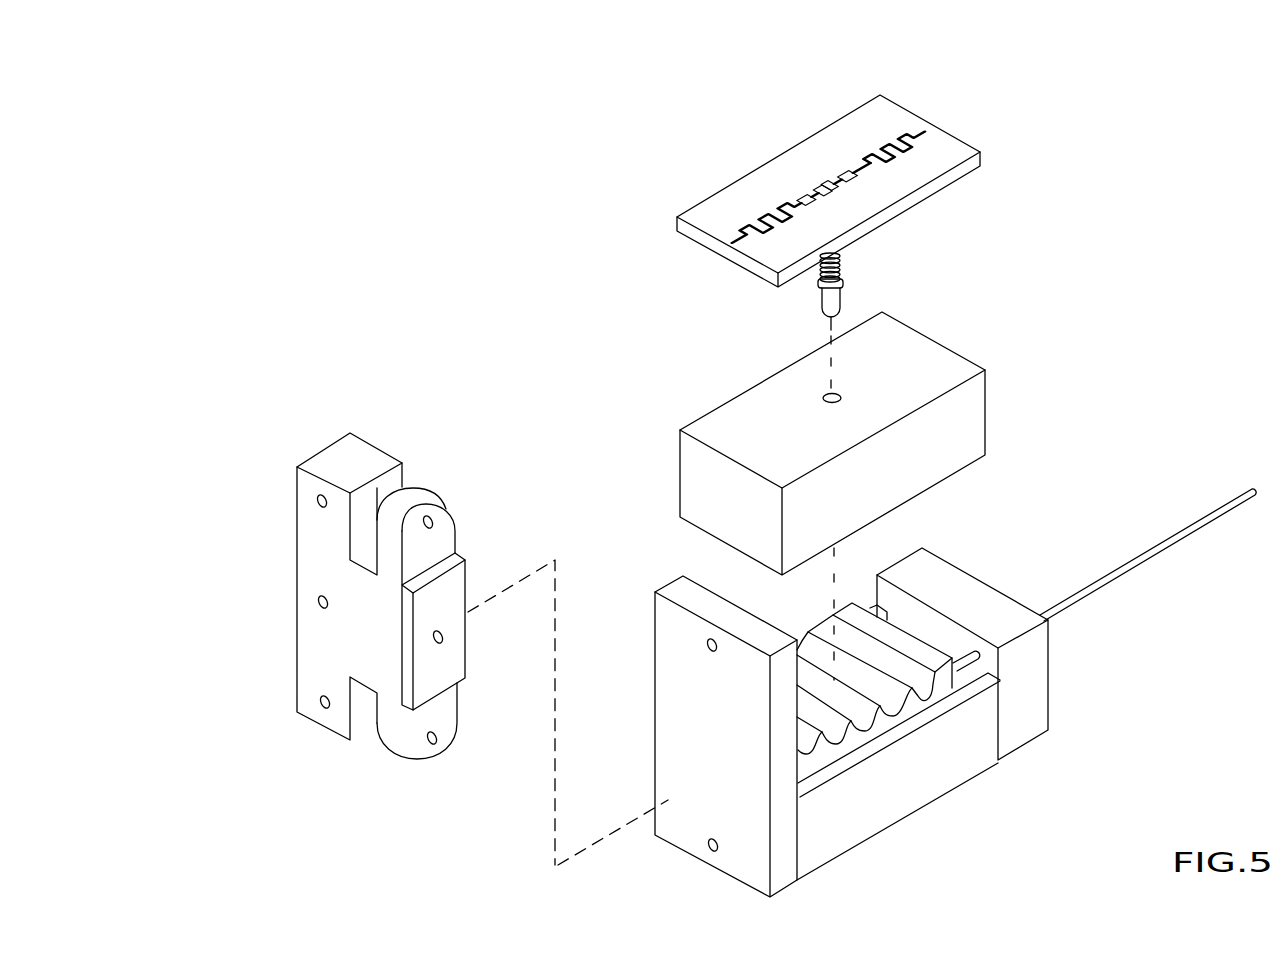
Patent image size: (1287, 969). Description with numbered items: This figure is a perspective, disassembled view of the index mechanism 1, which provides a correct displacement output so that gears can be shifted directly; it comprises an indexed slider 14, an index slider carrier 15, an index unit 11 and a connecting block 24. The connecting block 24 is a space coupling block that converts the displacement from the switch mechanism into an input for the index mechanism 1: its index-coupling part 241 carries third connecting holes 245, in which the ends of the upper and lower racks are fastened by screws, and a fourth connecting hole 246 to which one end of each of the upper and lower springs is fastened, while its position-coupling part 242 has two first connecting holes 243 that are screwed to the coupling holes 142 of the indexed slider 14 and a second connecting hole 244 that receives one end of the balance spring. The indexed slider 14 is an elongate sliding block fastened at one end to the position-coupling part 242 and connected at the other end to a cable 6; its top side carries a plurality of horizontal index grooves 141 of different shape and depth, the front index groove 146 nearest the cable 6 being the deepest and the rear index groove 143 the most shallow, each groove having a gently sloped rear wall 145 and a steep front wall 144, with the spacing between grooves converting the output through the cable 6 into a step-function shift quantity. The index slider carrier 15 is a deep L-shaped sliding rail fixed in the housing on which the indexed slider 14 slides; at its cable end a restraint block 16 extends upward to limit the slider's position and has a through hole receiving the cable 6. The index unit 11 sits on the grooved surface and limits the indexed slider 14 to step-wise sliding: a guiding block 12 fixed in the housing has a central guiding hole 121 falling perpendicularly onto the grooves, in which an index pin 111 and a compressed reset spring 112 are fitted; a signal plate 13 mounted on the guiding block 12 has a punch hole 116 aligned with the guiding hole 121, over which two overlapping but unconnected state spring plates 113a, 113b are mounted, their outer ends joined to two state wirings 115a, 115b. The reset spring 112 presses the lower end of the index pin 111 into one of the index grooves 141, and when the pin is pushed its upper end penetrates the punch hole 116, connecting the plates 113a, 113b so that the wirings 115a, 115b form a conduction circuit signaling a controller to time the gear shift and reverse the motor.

The index mechanism 1 is at (516, 325).
The index unit 11 is at (861, 283).
The index pin 111 is at (822, 307).
The reset spring 112 is at (843, 268).
The state spring plate 113a is at (804, 193).
The state spring plate 113b is at (828, 170).
The state wiring 115a is at (747, 218).
The state wiring 115b is at (913, 131).
The punch hole 116 is at (840, 186).
The guiding block 12 is at (687, 478).
The guiding hole 121 is at (826, 397).
The signal plate 13 is at (963, 153).
The indexed slider 14 is at (847, 611).
The index grooves 141 is at (806, 631).
The coupling holes 142 is at (708, 647).
The rear index groove 143 is at (814, 747).
The front wall 144 is at (863, 727).
The rear wall 145 is at (878, 718).
The front index groove 146 is at (924, 696).
The index slider carrier 15 is at (961, 773).
The restraint block 16 is at (1022, 736).
The cable 6 is at (1132, 553).
The connecting block 24 is at (288, 589).
The index-coupling part 241 is at (448, 533).
The position-coupling part 242 is at (332, 448).
The first connecting holes 243 is at (318, 497).
The second connecting hole 244 is at (316, 601).
The third connecting holes 245 is at (433, 516).
The fourth connecting hole 246 is at (445, 637).